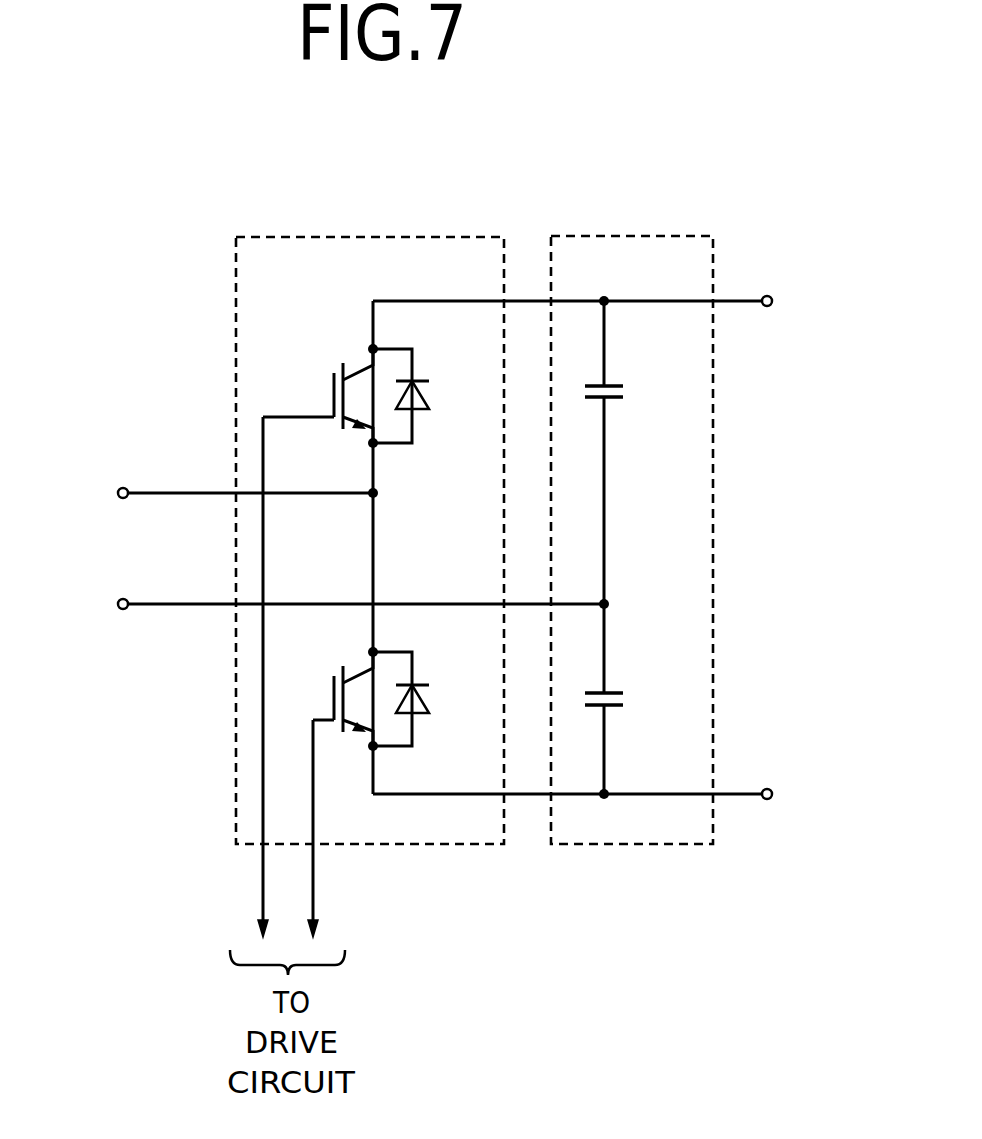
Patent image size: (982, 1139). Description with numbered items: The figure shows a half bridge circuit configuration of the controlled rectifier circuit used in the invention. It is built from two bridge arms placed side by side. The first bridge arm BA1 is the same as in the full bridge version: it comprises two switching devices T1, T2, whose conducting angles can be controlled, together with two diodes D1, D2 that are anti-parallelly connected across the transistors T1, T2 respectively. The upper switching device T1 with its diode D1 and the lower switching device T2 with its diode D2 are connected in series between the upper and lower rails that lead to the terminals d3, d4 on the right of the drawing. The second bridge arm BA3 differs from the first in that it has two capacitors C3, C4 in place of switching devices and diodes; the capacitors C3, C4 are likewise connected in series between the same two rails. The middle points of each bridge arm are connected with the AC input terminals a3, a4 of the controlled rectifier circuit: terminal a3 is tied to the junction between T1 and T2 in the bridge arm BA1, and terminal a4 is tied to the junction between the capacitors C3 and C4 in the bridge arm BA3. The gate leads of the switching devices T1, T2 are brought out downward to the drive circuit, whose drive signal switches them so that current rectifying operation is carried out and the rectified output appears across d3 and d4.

The first bridge arm BA1 is at (376, 237).
The second bridge arm BA3 is at (636, 236).
The switching device T1 is at (315, 627).
The switching device T2 is at (331, 780).
The diode D1 is at (425, 395).
The diode D2 is at (426, 697).
The capacitor C3 is at (635, 396).
The capacitor C4 is at (635, 700).
The AC input terminal a3 is at (216, 496).
The AC input terminal a4 is at (332, 608).
The DC output terminal d3 is at (794, 303).
The DC output terminal d4 is at (794, 796).